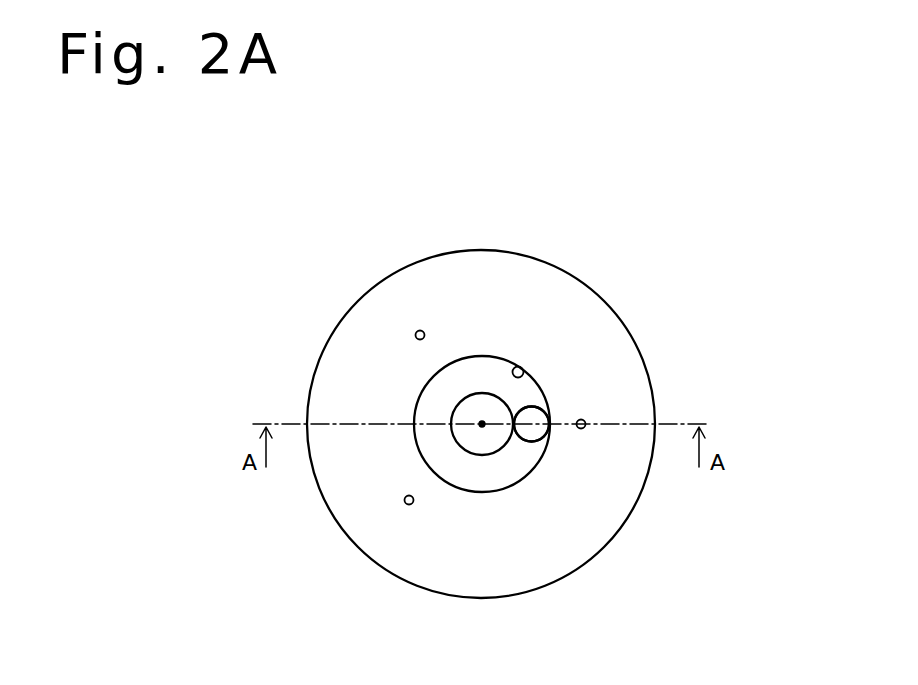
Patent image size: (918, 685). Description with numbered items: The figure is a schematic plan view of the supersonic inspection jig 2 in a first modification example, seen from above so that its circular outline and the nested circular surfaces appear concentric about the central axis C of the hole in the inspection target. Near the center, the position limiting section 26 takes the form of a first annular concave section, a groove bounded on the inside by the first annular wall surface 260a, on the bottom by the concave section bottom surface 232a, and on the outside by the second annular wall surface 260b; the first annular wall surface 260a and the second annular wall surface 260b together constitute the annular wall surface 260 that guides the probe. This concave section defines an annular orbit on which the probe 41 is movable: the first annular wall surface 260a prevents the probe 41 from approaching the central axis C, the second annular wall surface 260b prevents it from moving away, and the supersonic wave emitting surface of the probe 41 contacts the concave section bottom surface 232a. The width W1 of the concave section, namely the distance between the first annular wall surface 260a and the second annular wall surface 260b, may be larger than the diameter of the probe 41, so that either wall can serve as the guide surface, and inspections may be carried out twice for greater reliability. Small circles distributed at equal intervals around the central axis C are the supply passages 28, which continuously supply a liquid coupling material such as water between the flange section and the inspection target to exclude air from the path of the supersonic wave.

The supersonic inspection jig 2 is at (618, 517).
The position limiting section 26 is at (482, 368).
The supply passage 28 is at (420, 331).
The probe 41 is at (541, 410).
The concave section bottom surface 232a is at (488, 392).
The first annular wall surface 260 is at (646, 343).
The first annular wall surface 260a is at (504, 360).
The second annular wall surface 260b is at (520, 366).
The central axis C is at (482, 424).
The width of the first annular concave section W1 is at (460, 446).